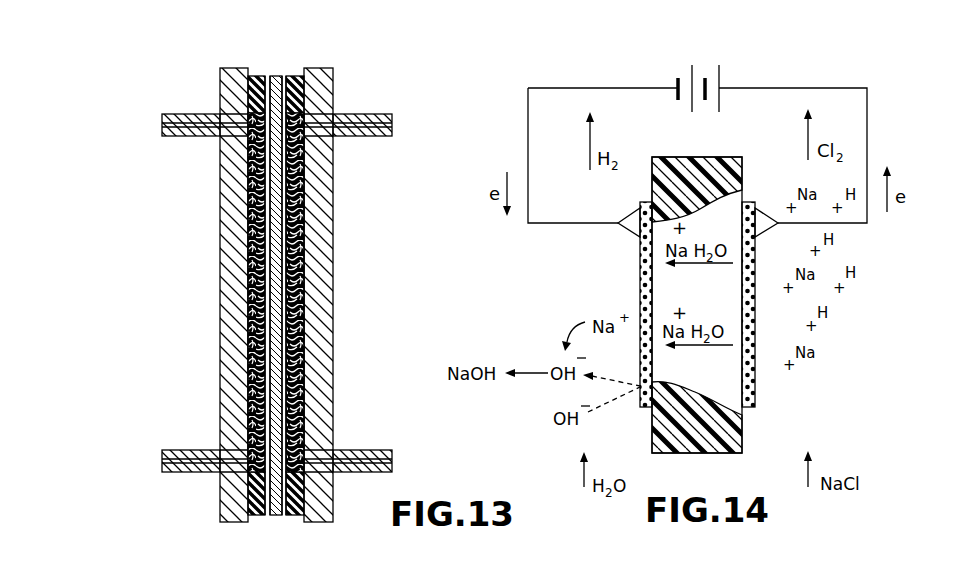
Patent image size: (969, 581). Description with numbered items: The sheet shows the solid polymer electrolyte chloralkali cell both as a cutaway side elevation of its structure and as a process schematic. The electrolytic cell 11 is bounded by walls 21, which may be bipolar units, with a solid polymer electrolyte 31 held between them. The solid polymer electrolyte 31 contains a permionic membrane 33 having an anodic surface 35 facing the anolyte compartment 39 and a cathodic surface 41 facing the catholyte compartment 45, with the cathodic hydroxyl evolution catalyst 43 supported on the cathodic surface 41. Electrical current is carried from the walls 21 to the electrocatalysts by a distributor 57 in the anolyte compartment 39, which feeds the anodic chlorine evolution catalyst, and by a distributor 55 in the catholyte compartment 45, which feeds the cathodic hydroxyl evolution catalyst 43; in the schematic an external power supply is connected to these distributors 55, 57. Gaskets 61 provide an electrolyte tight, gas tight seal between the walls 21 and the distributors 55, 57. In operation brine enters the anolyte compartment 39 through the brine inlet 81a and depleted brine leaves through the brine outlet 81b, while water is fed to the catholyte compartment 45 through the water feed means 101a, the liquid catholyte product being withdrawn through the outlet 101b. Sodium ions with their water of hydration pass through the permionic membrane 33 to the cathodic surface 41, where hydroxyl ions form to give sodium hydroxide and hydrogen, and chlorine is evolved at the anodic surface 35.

In FIG. 13, the electrolytic cell 11 is at (139, 278).
In FIG. 13, the wall 21 is at (225, 178).
In FIG. 13, the solid polymer electrolyte 31 is at (276, 76).
In FIG. 14, the solid polymer electrolyte 31 is at (697, 445).
In FIG. 13, the permionic membrane 33 is at (310, 448).
In FIG. 14, the permionic membrane 33 is at (742, 436).
In FIG. 13, the anodic surface 35 is at (285, 238).
In FIG. 14, the anodic surface 35 is at (755, 400).
In FIG. 13, the anolyte compartment 39 is at (318, 295).
In FIG. 13, the cathodic surface 41 is at (250, 455).
In FIG. 14, the cathodic surface 41 is at (645, 400).
In FIG. 13, the cathodic hydroxyl evolution catalyst 43 is at (250, 220).
In FIG. 14, the cathodic hydroxyl evolution catalyst 43 is at (640, 287).
In FIG. 13, the catholyte compartment 45 is at (237, 256).
In FIG. 13, the distributor 55 is at (250, 318).
In FIG. 14, the distributor 55 is at (630, 215).
In FIG. 13, the distributor 57 is at (300, 218).
In FIG. 14, the distributor 57 is at (778, 215).
In FIG. 13, the gasket 61 is at (258, 77).
In FIG. 13, the brine inlet 81a is at (416, 123).
In FIG. 13, the brine outlet 81b is at (440, 462).
In FIG. 13, the water feed means 101a is at (140, 126).
In FIG. 13, the catholyte outlet 101b is at (114, 462).